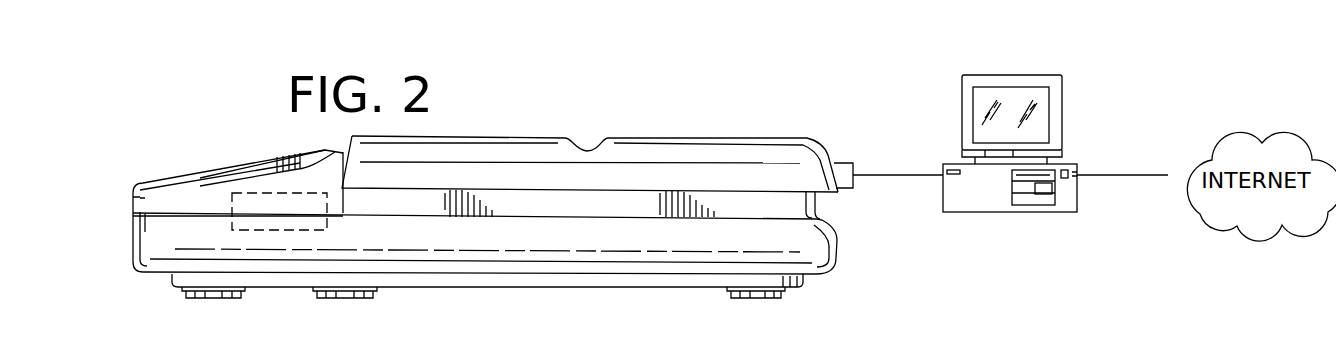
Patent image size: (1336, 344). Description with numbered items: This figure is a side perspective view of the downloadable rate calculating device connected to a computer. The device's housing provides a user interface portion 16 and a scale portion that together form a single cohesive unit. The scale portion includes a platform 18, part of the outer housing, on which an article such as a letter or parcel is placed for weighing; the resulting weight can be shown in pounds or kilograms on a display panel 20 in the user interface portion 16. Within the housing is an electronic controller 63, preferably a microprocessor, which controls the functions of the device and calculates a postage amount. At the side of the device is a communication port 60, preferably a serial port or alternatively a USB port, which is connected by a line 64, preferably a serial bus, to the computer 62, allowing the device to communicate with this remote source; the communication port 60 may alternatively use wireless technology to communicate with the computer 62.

The user interface portion 16 is at (173, 177).
The platform 18 is at (688, 138).
The display panel 20 is at (235, 163).
The communication port 60 is at (842, 188).
The computer 62 is at (1080, 173).
The electronic controller 63 is at (232, 230).
The line 64 is at (877, 173).